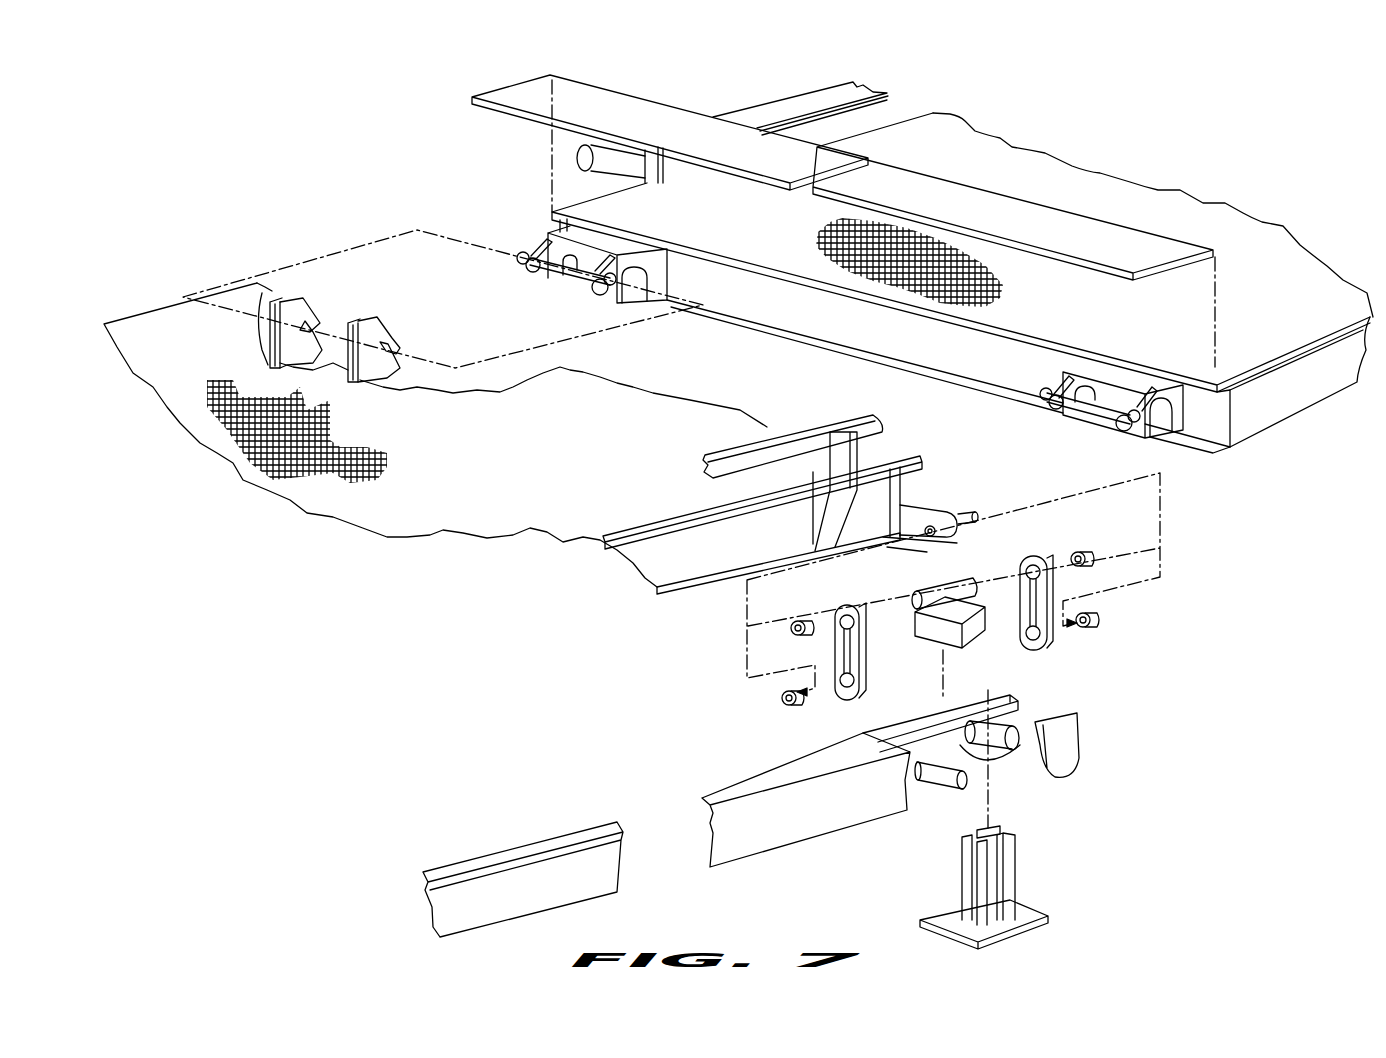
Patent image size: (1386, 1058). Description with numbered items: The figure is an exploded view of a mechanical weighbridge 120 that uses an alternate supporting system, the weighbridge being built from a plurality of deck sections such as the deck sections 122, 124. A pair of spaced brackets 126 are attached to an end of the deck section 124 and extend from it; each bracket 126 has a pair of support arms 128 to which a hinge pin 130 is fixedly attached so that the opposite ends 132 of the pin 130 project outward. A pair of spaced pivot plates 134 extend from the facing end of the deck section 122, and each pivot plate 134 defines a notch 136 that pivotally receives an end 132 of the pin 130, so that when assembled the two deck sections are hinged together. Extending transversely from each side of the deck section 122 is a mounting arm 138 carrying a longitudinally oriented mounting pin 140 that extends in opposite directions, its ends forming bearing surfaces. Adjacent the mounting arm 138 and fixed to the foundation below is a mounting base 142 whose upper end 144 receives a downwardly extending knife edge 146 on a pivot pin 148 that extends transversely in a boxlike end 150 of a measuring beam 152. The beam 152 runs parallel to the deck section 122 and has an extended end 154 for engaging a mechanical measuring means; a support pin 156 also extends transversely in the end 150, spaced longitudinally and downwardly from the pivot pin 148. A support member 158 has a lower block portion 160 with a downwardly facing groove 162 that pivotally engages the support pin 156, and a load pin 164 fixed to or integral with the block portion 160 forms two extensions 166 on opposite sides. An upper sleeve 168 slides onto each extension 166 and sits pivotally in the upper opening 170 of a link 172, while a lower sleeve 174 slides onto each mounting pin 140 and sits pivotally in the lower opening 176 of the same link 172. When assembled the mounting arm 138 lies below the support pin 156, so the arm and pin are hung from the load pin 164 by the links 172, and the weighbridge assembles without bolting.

The mechanical weighbridge 120 is at (293, 233).
The deck section 122 is at (473, 500).
The deck section 124 is at (1300, 305).
The bracket 126 is at (608, 238).
The support arm 128 is at (545, 240).
The hinge pin 130 is at (575, 273).
The end of pin 132 is at (520, 267).
The pivot plate 134 is at (290, 317).
The notch 136 is at (393, 343).
The mounting arm 138 is at (920, 513).
The mounting pin 140 is at (970, 518).
The mounting base 142 is at (1007, 885).
The upper end of mounting base 144 is at (997, 830).
The knife edge 146 is at (1000, 733).
The pivot pin 148 is at (1013, 697).
The boxlike end of measuring beam 150 is at (967, 707).
The measuring beam 152 is at (1063, 746).
The extended end of beam 154 is at (545, 870).
The support pin 156 is at (947, 783).
The support member 158 is at (962, 595).
The lower block portion 160 is at (973, 653).
The groove 162 is at (939, 632).
The load pin 164 is at (970, 587).
The extension 166 is at (944, 566).
The upper sleeve 168 is at (790, 630).
The upper opening 170 is at (948, 650).
The link 172 is at (948, 650).
The lower sleeve 174 is at (795, 707).
The lower opening 176 is at (847, 613).